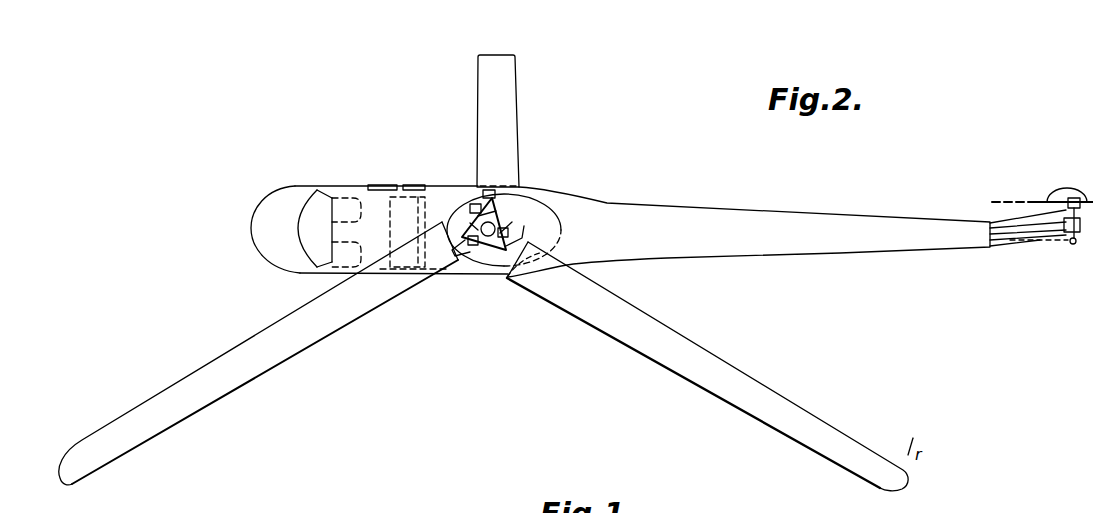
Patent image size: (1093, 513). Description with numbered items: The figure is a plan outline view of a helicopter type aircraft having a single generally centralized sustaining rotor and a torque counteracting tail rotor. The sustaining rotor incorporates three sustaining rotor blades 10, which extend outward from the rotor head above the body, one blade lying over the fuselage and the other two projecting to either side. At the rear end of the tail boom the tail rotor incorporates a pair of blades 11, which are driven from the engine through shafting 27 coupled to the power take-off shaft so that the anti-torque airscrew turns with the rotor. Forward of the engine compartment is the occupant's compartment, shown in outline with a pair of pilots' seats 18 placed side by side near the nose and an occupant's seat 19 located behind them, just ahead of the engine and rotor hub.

The sustaining rotor blades 10 is at (510, 110).
The tail rotor blades 11 is at (1063, 196).
The pilots' seats 18 is at (346, 192).
The occupant's seat 19 is at (411, 196).
The shafting 27 is at (999, 241).